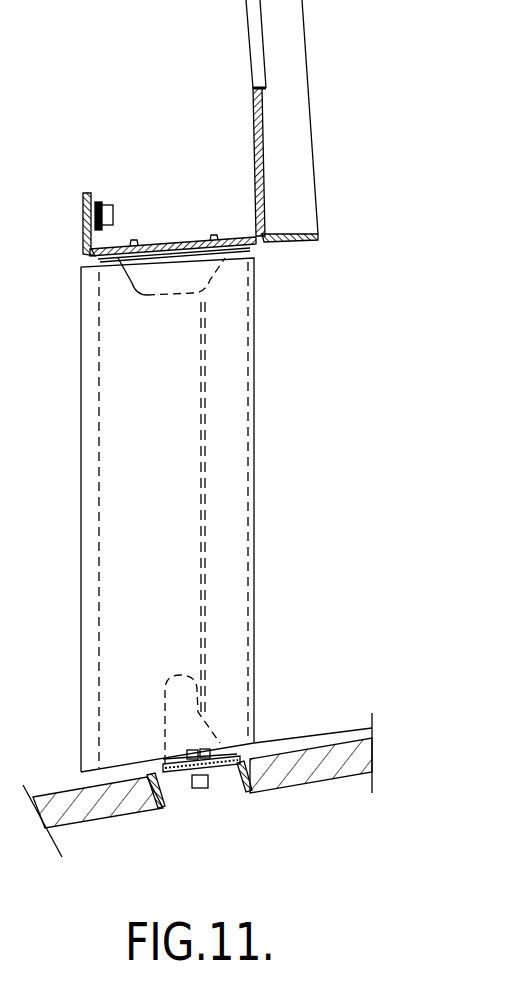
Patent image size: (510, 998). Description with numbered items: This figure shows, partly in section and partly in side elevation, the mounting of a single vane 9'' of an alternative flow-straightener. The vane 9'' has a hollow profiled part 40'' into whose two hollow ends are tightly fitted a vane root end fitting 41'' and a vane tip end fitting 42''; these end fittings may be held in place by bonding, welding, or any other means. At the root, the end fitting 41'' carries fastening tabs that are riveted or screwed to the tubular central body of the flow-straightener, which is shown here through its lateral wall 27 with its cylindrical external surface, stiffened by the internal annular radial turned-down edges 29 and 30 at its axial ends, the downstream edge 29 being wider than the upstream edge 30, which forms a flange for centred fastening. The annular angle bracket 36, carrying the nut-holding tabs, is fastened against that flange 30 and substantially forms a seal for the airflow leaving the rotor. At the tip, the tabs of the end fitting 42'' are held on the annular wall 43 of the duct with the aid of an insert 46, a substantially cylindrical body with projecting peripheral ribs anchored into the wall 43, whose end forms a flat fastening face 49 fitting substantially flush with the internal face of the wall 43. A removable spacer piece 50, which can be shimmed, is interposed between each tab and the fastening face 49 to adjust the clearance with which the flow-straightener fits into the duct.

The vane 9'' is at (218, 507).
The lateral wall 27 is at (177, 243).
The downstream turned-down edge 29 is at (83, 214).
The upstream turned-down edge 30 is at (253, 202).
The annular angle bracket 36 is at (292, 232).
The profiled part 40'' is at (266, 507).
The vane root end fitting 41'' is at (226, 268).
The vane tip end fitting 42'' is at (226, 739).
The annular wall 43 is at (330, 765).
The insert 46 is at (243, 783).
The fastening face 49 is at (187, 782).
The spacer piece 50 is at (165, 763).